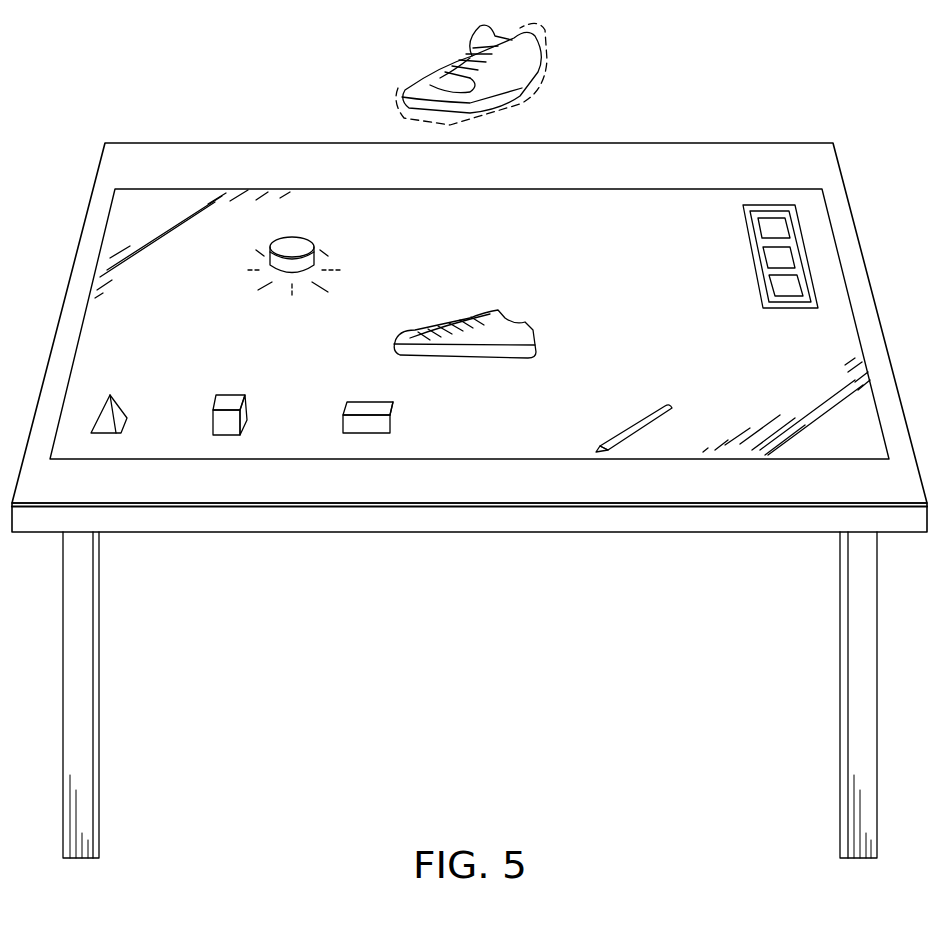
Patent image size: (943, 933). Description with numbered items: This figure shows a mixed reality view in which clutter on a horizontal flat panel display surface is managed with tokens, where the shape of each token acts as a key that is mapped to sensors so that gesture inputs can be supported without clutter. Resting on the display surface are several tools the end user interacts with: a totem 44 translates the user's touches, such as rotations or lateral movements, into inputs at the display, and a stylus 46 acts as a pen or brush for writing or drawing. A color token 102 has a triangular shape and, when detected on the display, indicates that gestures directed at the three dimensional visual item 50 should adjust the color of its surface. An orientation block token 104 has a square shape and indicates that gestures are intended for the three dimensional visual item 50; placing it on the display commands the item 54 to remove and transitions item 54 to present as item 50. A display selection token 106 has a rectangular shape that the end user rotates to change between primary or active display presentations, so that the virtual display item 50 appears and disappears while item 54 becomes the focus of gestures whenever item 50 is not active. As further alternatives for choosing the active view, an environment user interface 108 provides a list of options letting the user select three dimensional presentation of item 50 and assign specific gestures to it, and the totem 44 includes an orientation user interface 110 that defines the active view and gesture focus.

The totem 44 is at (314, 258).
The stylus 46 is at (634, 422).
The three dimensional visual item 50 is at (442, 66).
The item 54 is at (452, 326).
The color token 102 is at (104, 433).
The orientation block token 104 is at (228, 433).
The display selection token 106 is at (366, 433).
The environment user interface 108 is at (750, 258).
The orientation user interface 110 is at (240, 285).